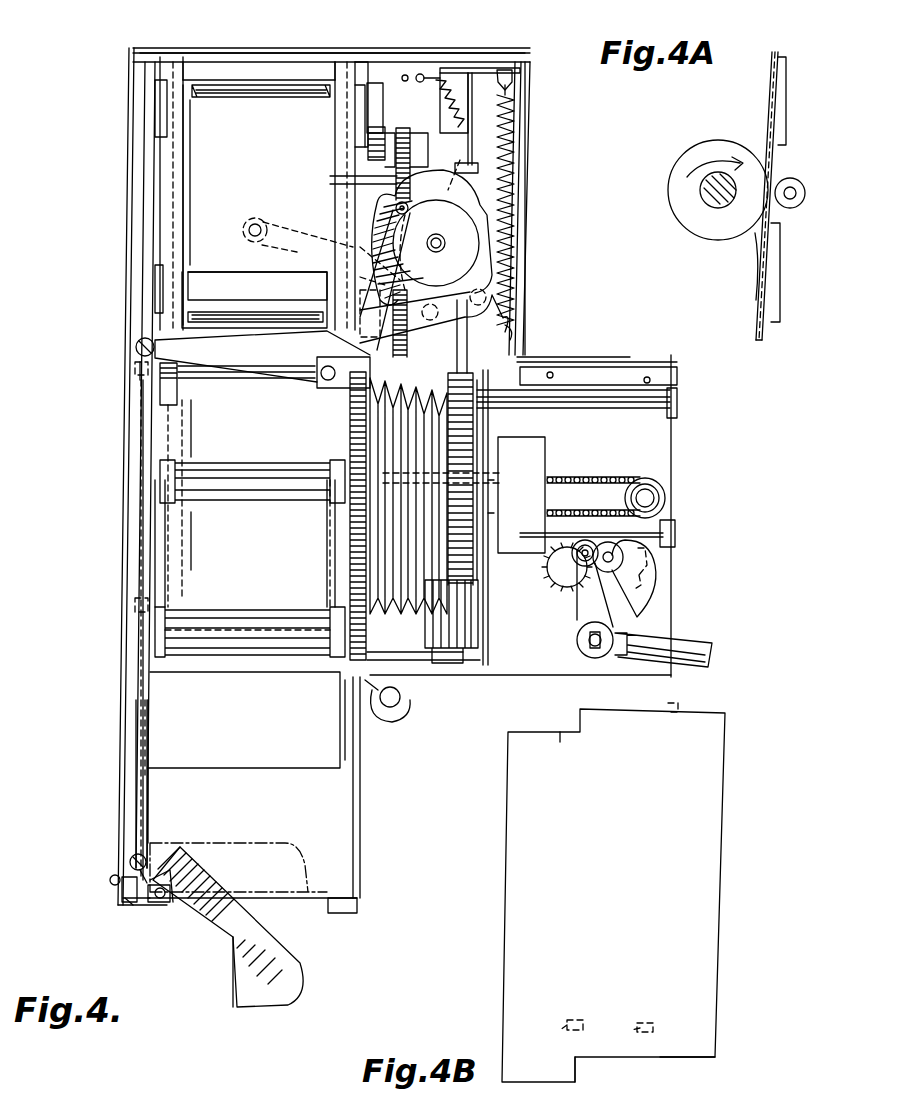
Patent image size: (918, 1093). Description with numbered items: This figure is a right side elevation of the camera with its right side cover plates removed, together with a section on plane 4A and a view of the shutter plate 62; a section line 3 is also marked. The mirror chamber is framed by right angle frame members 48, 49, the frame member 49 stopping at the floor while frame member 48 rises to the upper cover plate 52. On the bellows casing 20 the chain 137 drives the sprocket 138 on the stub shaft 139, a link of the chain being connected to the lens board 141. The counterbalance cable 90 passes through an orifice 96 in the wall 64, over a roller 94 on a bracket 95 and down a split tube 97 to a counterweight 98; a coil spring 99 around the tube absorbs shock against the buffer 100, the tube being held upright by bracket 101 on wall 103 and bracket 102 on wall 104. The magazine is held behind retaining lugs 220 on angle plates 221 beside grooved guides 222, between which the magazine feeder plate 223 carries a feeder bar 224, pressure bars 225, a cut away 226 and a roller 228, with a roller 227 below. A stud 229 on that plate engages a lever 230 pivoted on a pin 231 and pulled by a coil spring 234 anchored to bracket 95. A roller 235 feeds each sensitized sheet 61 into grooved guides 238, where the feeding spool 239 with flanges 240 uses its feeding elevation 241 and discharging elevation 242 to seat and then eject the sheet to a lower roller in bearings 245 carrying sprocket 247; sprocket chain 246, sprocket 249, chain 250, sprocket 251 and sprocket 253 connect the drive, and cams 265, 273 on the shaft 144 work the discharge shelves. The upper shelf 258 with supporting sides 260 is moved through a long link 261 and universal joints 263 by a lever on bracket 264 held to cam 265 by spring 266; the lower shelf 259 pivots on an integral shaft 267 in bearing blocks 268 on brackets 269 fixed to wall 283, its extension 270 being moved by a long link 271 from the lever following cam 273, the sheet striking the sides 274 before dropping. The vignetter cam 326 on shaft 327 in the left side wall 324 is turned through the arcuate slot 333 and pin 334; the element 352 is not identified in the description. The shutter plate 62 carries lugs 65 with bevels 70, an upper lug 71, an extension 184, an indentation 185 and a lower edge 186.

In FIG. 4, the section line 3- 3 is at (118, 510).
In FIG. 4, the section plane 4A— 4A is at (206, 425).
In FIG. 4, the bellows casing 20 is at (655, 617).
In FIG. 4, the frame member 48 is at (130, 903).
In FIG. 4, the frame member 49 is at (352, 908).
In FIG. 4, the upper cover plate 52 is at (257, 52).
In FIG. 4, the sensitized sheet 61 is at (185, 549).
In FIG. 4A, the sensitized sheet 61 is at (768, 150).
In FIG. 4B, the shutter plate 62 is at (665, 825).
In FIG. 4, the wall 64 is at (204, 252).
In FIG. 4B, the lugs 65 is at (590, 1020).
In FIG. 4B, the bevel 70 is at (570, 1018).
In FIG. 4B, the lug 71 is at (668, 703).
In FIG. 4, the cable 90 is at (478, 110).
In FIG. 4, the roller 94 is at (463, 110).
In FIG. 4, the bracket 95 is at (458, 68).
In FIG. 4, the orifice 96 is at (425, 75).
In FIG. 4, the split tube 97 is at (469, 351).
In FIG. 4, the counterweight 98 is at (470, 618).
In FIG. 4, the coil spring 99 is at (470, 410).
In FIG. 4, the buffer 100 is at (472, 160).
In FIG. 4, the bracket 101 is at (525, 150).
In FIG. 4, the bracket 102 is at (415, 658).
In FIG. 4, the wall 103 is at (530, 195).
In FIG. 4, the wall 104 is at (362, 797).
In FIG. 4, the chain 137 is at (600, 478).
In FIG. 4, the sprocket 138 is at (645, 490).
In FIG. 4, the stub shaft 139 is at (652, 495).
In FIG. 4, the lens board 141 is at (478, 663).
In FIG. 4, the shaft 144 is at (443, 242).
In FIG. 4B, the extension 184 is at (575, 1075).
In FIG. 4B, the indentation 185 is at (558, 732).
In FIG. 4B, the lower edge 186 is at (660, 1060).
In FIG. 4, the magazine retaining lugs 220 is at (160, 113).
In FIG. 4, the angle plates 221 is at (146, 205).
In FIG. 4, the grooved guides 222 is at (350, 68).
In FIG. 4, the magazine feeder plate 223 is at (185, 160).
In FIG. 4, the feeder bar 224 is at (200, 67).
In FIG. 4, the pressure bars 225 is at (338, 143).
In FIG. 4, the cut away 226 is at (240, 280).
In FIG. 4, the roller 227 is at (290, 314).
In FIG. 4, the roller 228 is at (272, 97).
In FIG. 4, the stud 229 is at (255, 224).
In FIG. 4, the lever 230 is at (510, 335).
In FIG. 4, the pin 231 is at (330, 233).
In FIG. 4, the contractile coil spring 234 is at (500, 296).
In FIG. 4, the roller 235 is at (235, 383).
In FIG. 4, the grooved guides 238 is at (178, 410).
In FIG. 4A, the grooved guides 238 is at (770, 72).
In FIG. 4, the feeding spool 239 is at (242, 497).
In FIG. 4A, the feeding spool 239 is at (712, 200).
In FIG. 4A, the flanges 240 is at (718, 232).
In FIG. 4A, the feeding elevation 241 is at (754, 235).
In FIG. 4A, the discharging elevation 242 is at (720, 140).
In FIG. 4, the bearings 245 is at (245, 618).
In FIG. 4, the sprocket chain 246 is at (347, 549).
In FIG. 4, the sprocket 247 is at (395, 712).
In FIG. 4, the sprocket 249 is at (395, 375).
In FIG. 4, the chain 250 is at (390, 176).
In FIG. 4, the sprocket 251 is at (403, 127).
In FIG. 4, the sprocket 253 is at (379, 126).
In FIG. 4, the upper shelf 258 is at (330, 578).
In FIG. 4, the lower shelf 259 is at (295, 975).
In FIG. 4, the supporting sides 260 is at (150, 735).
In FIG. 4, the long link 261 is at (143, 400).
In FIG. 4, the universal joints 263 is at (135, 362).
In FIG. 4, the bracket 264 is at (325, 388).
In FIG. 4, the cam 265 is at (492, 178).
In FIG. 4, the contractile spring 266 is at (440, 120).
In FIG. 4, the integral shaft 267 is at (157, 905).
In FIG. 4, the bearing blocks 268 is at (175, 905).
In FIG. 4, the brackets 269 is at (133, 906).
In FIG. 4, the integral extension 270 is at (135, 872).
In FIG. 4, the long link 271 is at (137, 806).
In FIG. 4, the cam 273 is at (460, 258).
In FIG. 4, the sides 274 is at (233, 940).
In FIG. 4, the wall 283 is at (130, 727).
In FIG. 4, the left side wall 324 is at (605, 663).
In FIG. 4, the cam 326 is at (645, 582).
In FIG. 4, the shaft 327 is at (600, 560).
In FIG. 4, the arcuately shaped slot 333 is at (655, 598).
In FIG. 4, the pin 334 is at (632, 572).
In FIG. 4, the gear 352 is at (548, 572).